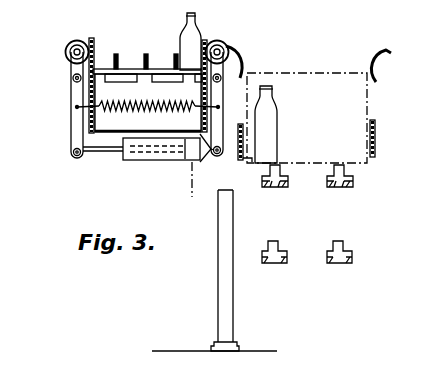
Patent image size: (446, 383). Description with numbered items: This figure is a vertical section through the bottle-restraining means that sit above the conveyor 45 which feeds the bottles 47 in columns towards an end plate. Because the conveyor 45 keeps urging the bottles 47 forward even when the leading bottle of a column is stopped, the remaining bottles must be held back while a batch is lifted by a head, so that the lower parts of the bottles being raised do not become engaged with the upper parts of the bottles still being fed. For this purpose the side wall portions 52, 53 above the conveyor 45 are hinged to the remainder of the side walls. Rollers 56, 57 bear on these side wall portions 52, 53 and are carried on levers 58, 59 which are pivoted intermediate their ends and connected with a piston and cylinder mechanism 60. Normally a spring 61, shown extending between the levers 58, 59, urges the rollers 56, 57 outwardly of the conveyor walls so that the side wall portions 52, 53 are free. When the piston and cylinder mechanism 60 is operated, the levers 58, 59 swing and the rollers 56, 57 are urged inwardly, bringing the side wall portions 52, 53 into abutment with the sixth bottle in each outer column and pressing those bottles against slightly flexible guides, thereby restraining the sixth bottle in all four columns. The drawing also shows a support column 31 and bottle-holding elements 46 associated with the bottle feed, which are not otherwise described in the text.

The support column 31 is at (217, 273).
The conveyor 45 is at (115, 82).
The bottle holding clips 46 is at (344, 170).
The bottles 47 is at (181, 37).
The side wall portion 52 is at (93, 50).
The side wall portion 53 is at (206, 44).
The roller 56 is at (68, 46).
The roller 57 is at (226, 47).
The lever 58 is at (71, 127).
The lever 59 is at (222, 119).
The piston and cylinder mechanism 60 is at (157, 160).
The spring 61 is at (149, 109).